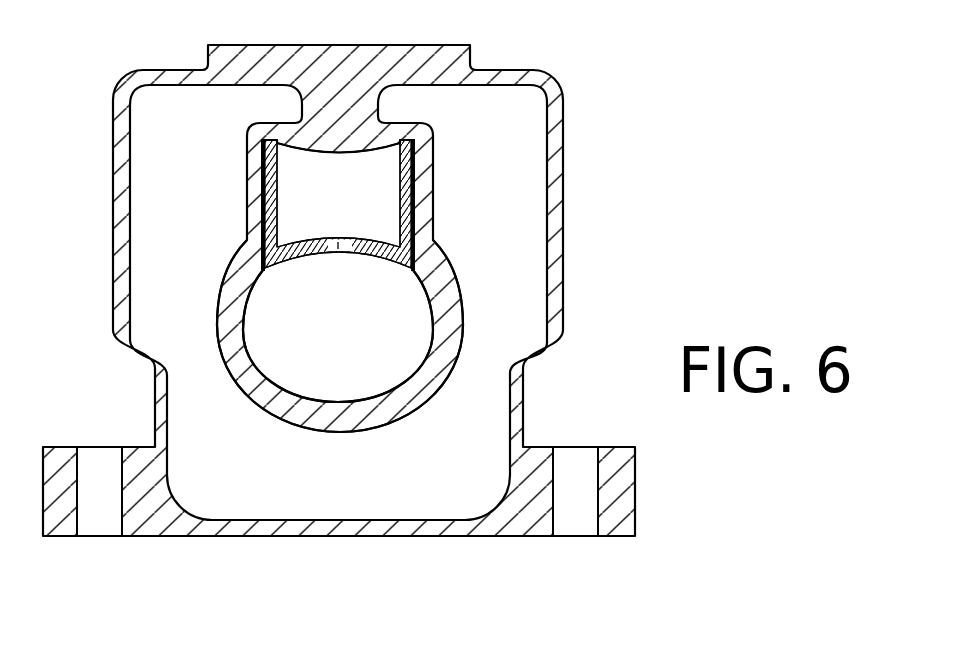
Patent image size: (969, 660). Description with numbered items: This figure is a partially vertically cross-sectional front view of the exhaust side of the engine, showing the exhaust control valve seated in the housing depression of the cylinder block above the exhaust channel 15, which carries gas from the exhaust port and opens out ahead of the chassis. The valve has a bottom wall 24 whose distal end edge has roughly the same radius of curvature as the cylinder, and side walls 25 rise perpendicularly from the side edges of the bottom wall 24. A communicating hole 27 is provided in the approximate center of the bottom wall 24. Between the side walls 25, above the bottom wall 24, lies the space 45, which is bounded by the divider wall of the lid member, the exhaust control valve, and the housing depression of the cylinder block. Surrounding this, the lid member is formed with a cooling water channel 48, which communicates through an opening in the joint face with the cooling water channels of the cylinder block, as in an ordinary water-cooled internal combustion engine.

The exhaust channel 15 is at (355, 386).
The bottom wall 24 is at (301, 262).
The side walls 25 is at (270, 210).
The communicating hole 27 is at (343, 254).
The space 45 is at (353, 210).
The cooling water channel 48 is at (516, 300).